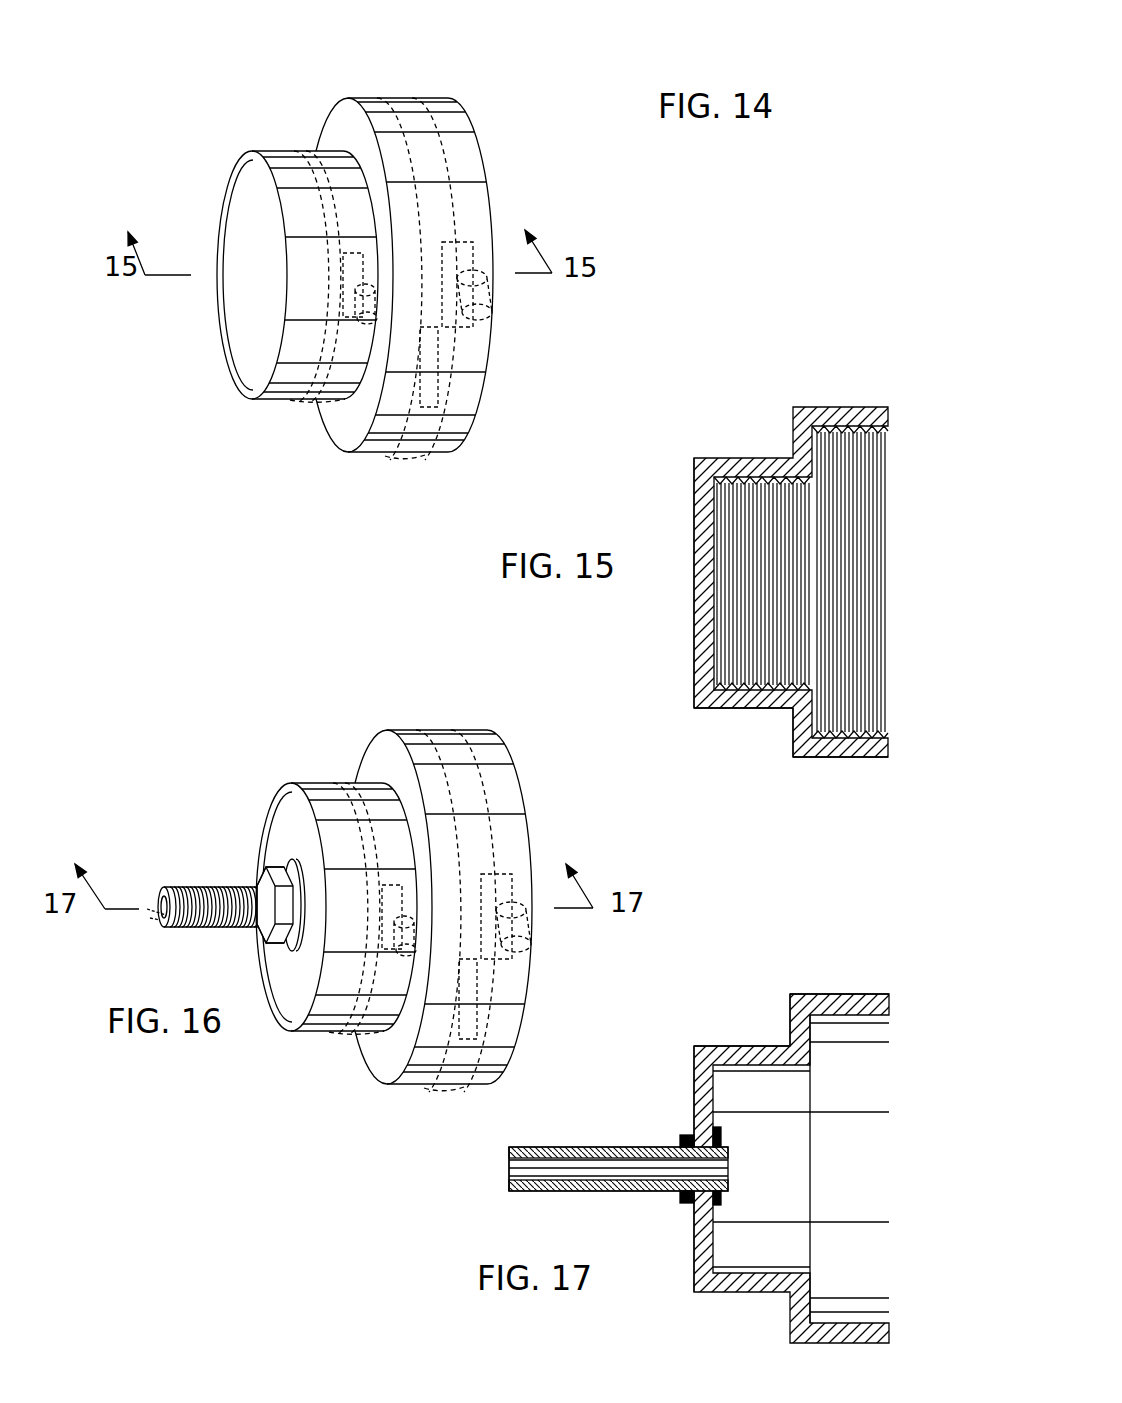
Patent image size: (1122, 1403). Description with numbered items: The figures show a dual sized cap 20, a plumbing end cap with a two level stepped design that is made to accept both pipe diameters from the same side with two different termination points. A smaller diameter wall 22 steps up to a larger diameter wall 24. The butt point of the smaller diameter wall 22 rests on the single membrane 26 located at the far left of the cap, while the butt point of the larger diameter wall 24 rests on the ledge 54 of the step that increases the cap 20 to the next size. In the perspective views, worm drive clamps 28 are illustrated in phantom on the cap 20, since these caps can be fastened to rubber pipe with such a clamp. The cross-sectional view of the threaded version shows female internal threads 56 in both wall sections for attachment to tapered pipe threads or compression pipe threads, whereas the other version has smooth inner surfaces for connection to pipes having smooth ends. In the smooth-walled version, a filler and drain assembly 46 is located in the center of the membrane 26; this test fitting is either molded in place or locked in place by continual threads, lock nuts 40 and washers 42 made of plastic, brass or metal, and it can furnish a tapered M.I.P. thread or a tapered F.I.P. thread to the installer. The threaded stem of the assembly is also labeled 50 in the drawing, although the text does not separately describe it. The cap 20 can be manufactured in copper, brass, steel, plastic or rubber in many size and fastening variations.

In FIG. 14, the dual sized cap 20 is at (353, 241).
In FIG. 15, the dual sized cap 20 is at (791, 572).
In FIG. 16, the dual sized cap 20 is at (319, 894).
In FIG. 17, the dual sized cap 20 is at (670, 1108).
In FIG. 14, the smaller diameter wall 22 is at (294, 174).
In FIG. 15, the smaller diameter wall 22 is at (715, 700).
In FIG. 16, the smaller diameter wall 22 is at (324, 793).
In FIG. 17, the smaller diameter wall 22 is at (728, 1042).
In FIG. 14, the larger diameter wall 24 is at (512, 128).
In FIG. 15, the larger diameter wall 24 is at (831, 750).
In FIG. 16, the larger diameter wall 24 is at (490, 752).
In FIG. 17, the larger diameter wall 24 is at (814, 996).
In FIG. 14, the single membrane 26 is at (240, 228).
In FIG. 15, the single membrane 26 is at (697, 661).
In FIG. 16, the single membrane 26 is at (283, 823).
In FIG. 17, the single membrane 26 is at (694, 1077).
In FIG. 14, the worm drive clamp 28 is at (470, 385).
In FIG. 16, the worm drive clamp 28 is at (506, 1023).
In FIG. 16, the lock nut 40 is at (264, 894).
In FIG. 17, the lock nut 40 is at (688, 1141).
In FIG. 16, the washer 42 is at (268, 879).
In FIG. 17, the washer 42 is at (697, 1131).
In FIG. 16, the filler and drain assembly 46 is at (163, 931).
In FIG. 17, the filler and drain assembly 46 is at (533, 1211).
In FIG. 16, the threaded stem 50 is at (180, 886).
In FIG. 17, the threaded stem 50 is at (566, 1147).
In FIG. 14, the ledge 54 is at (340, 121).
In FIG. 15, the ledge 54 is at (806, 713).
In FIG. 16, the ledge 54 is at (372, 758).
In FIG. 17, the ledge 54 is at (796, 1017).
In FIG. 15, the female internal threads 56 is at (868, 642).